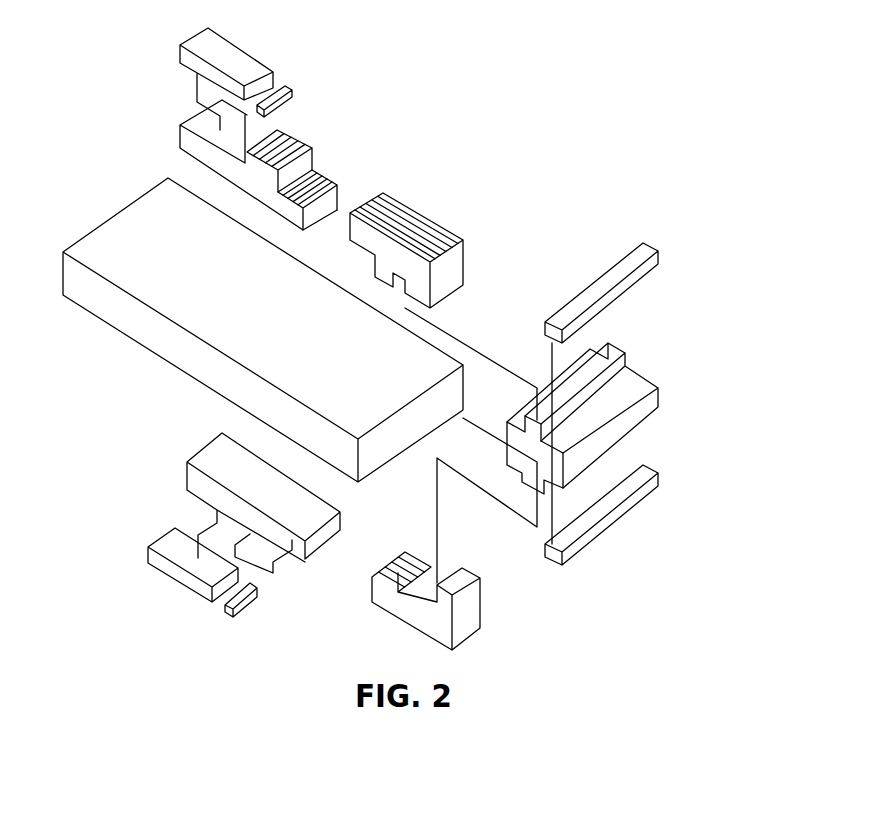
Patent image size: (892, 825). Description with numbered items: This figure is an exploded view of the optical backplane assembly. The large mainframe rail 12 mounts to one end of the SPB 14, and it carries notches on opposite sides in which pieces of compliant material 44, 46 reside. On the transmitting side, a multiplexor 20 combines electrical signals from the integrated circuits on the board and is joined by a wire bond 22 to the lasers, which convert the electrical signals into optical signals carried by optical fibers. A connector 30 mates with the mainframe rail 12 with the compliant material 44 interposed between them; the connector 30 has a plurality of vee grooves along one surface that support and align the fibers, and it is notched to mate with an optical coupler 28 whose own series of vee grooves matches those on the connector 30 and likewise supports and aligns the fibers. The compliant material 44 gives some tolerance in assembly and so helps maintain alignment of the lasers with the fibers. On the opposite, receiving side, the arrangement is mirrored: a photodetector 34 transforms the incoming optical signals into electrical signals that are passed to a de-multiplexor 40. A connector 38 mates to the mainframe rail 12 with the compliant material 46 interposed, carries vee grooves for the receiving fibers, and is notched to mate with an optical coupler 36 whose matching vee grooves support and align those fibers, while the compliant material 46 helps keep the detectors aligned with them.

The mainframe rail 12 is at (620, 362).
The SPB 14 is at (103, 243).
The multiplexor 20 is at (257, 68).
The wire bond 22 is at (286, 88).
The optical coupler 28 is at (288, 146).
The connector 30 is at (423, 228).
The photodetector 34 is at (243, 596).
The optical coupler 36 is at (225, 465).
The connector 38 is at (465, 622).
The de-multiplexor 40 is at (192, 583).
The compliant material 44 is at (655, 248).
The compliant material 46 is at (655, 471).